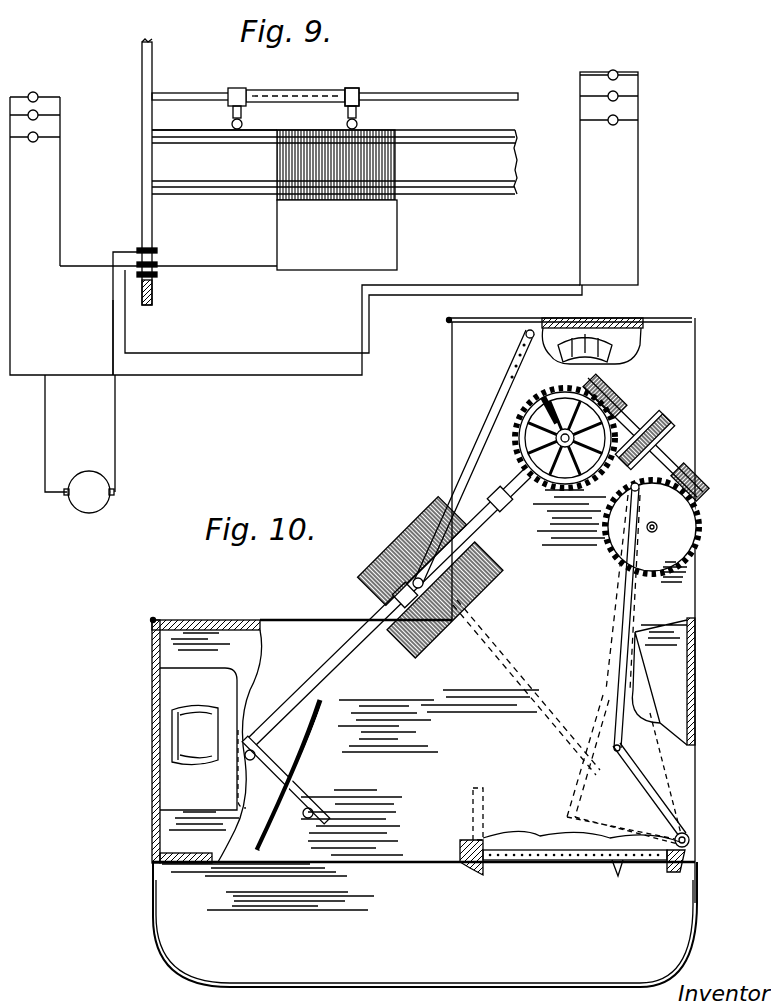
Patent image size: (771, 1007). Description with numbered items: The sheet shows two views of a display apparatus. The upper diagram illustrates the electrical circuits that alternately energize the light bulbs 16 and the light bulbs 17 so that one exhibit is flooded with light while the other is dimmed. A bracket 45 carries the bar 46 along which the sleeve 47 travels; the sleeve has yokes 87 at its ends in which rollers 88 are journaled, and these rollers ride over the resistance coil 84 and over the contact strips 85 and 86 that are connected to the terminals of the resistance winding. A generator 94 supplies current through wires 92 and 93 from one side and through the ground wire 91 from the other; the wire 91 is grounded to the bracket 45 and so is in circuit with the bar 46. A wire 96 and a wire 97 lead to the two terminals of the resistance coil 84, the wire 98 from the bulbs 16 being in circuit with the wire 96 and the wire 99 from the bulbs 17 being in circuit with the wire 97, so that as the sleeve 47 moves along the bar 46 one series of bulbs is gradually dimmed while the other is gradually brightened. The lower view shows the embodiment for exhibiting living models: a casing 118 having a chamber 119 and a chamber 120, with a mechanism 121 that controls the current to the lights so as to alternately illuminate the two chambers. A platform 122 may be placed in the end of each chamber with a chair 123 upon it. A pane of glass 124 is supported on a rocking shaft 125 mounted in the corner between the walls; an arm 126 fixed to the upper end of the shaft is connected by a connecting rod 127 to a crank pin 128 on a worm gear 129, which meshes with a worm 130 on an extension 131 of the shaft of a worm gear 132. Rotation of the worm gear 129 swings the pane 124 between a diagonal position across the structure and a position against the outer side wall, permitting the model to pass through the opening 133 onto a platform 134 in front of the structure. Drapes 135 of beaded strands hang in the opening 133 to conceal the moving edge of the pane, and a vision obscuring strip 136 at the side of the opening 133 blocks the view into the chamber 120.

In FIG. 9, the light bulbs 16 is at (618, 74).
In FIG. 9, the light bulbs 17 is at (38, 94).
In FIG. 9, the bracket 45 is at (152, 228).
In FIG. 9, the bar 46 is at (430, 95).
In FIG. 9, the sleeve 47 is at (310, 92).
In FIG. 9, the resistance coil 84 is at (340, 180).
In FIG. 9, the contact strip 85 is at (460, 131).
In FIG. 9, the contact strip 86 is at (267, 132).
In FIG. 9, the yokes 87 is at (360, 100).
In FIG. 9, the rollers 88 is at (360, 122).
In FIG. 9, the wire 91 is at (112, 337).
In FIG. 9, the wire 92 is at (185, 376).
In FIG. 9, the wire 93 is at (13, 335).
In FIG. 9, the generator 94 is at (100, 500).
In FIG. 9, the wire 96 is at (236, 272).
In FIG. 9, the wire 97 is at (212, 264).
In FIG. 9, the wire 98 is at (638, 173).
In FIG. 9, the wire 99 is at (60, 197).
In FIG. 10, the casing 118 is at (681, 611).
In FIG. 10, the chamber 119 is at (680, 390).
In FIG. 10, the chamber 120 is at (307, 620).
In FIG. 10, the mechanism 121 is at (480, 562).
In FIG. 10, the platform 122 is at (625, 340).
In FIG. 10, the chair 123 is at (590, 362).
In FIG. 10, the pane of glass 124 is at (655, 703).
In FIG. 10, the rocking shaft 125 is at (690, 838).
In FIG. 10, the arm 126 is at (657, 797).
In FIG. 10, the connecting rod 127 is at (622, 604).
In FIG. 10, the crank pin 128 is at (640, 491).
In FIG. 10, the worm gear 129 is at (685, 528).
In FIG. 10, the worm 130 is at (698, 488).
In FIG. 10, the shaft extension 131 is at (682, 462).
In FIG. 10, the worm gear 132 is at (672, 434).
In FIG. 10, the opening 133 is at (541, 860).
In FIG. 10, the platform 134 is at (425, 924).
In FIG. 10, the drapes 135 is at (615, 862).
In FIG. 10, the vision obscuring strip 136 is at (486, 818).